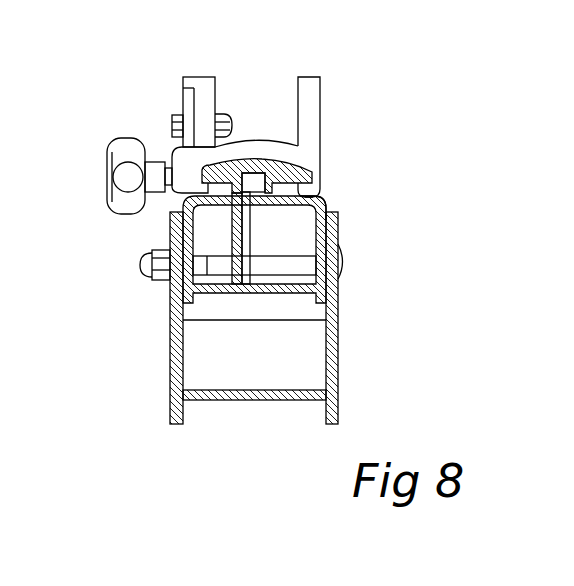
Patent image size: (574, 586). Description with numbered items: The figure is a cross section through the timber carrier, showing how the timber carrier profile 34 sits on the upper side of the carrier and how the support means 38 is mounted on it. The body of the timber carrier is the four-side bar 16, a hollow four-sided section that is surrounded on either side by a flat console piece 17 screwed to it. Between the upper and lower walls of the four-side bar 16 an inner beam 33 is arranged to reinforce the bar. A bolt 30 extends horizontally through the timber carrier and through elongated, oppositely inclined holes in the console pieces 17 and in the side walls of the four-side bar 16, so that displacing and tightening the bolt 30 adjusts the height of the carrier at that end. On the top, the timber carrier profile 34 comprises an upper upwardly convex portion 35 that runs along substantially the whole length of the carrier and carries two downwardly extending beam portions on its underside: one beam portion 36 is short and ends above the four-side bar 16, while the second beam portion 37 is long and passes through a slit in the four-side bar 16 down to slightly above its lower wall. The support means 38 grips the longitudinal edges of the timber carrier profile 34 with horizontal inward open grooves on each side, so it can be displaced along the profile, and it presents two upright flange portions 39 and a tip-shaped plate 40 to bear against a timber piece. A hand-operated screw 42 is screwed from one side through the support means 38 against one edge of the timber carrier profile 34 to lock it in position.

The four-side bar 16 is at (313, 203).
The console piece 17 is at (331, 358).
The bolt 30 is at (290, 265).
The inner beam 33 is at (248, 247).
The timber carrier profile 34 is at (252, 170).
The upper upwardly convex portion 35 is at (300, 182).
The beam portion 36 is at (271, 193).
The second beam portion 37 is at (238, 237).
The support means 38 is at (134, 96).
The upright flange portions 39 is at (205, 83).
The tip-shaped plate 40 is at (183, 93).
The hand-operated screw 42 is at (126, 150).